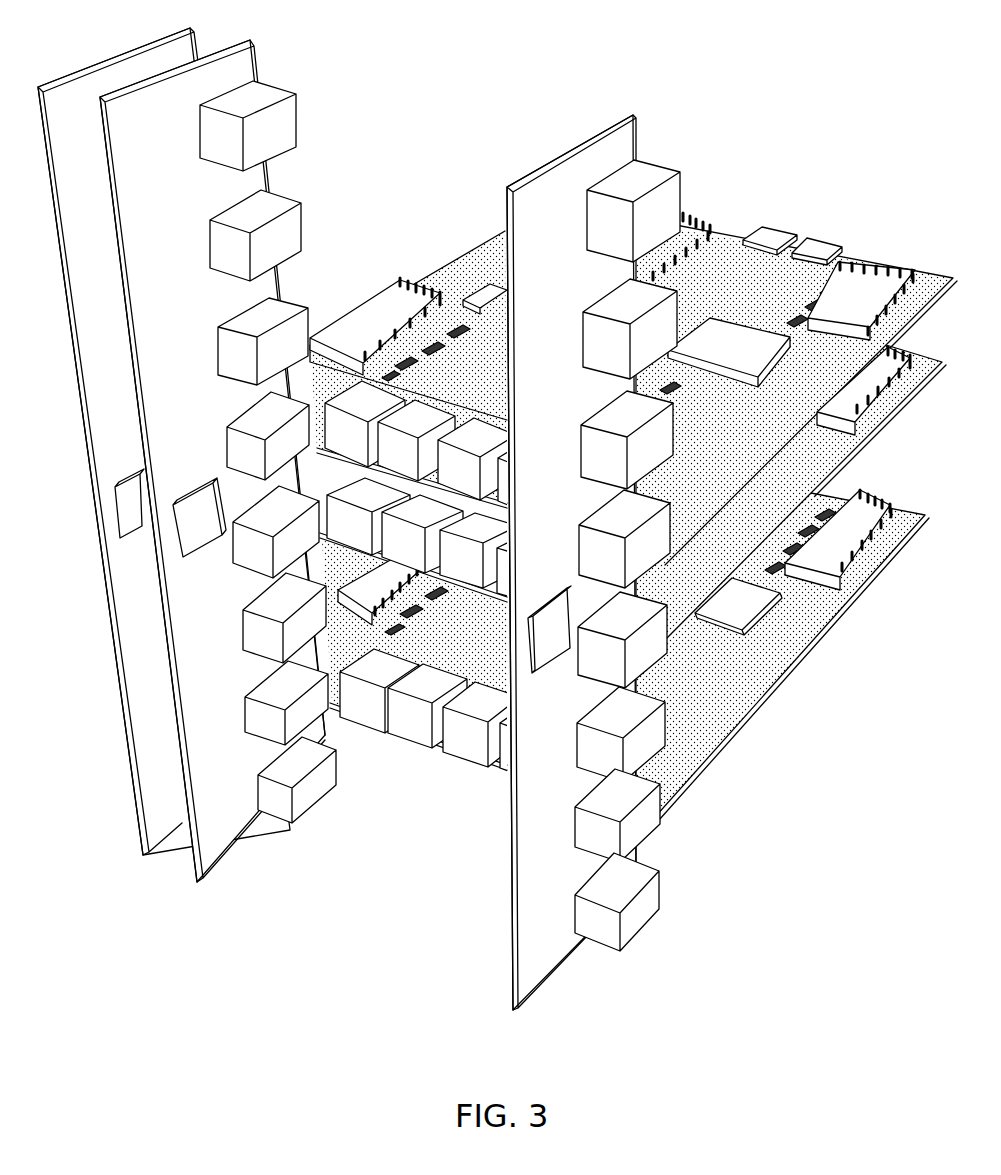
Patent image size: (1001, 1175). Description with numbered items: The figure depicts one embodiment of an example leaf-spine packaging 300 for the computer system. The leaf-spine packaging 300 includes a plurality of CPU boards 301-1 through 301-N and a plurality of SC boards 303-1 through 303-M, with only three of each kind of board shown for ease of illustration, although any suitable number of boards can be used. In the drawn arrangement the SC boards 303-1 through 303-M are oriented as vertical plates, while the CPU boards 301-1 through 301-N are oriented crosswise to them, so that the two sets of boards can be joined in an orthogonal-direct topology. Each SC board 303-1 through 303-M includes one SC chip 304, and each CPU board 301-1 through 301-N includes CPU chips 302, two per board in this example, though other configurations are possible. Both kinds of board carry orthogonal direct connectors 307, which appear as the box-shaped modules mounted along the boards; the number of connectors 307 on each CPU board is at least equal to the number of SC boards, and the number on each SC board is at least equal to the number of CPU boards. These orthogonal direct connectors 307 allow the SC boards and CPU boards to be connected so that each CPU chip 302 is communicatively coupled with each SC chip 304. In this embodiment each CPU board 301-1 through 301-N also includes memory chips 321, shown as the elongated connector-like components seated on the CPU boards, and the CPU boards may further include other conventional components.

The leaf-spine packaging 300 is at (497, 534).
The CPU board 301-1 is at (430, 268).
The CPU board 301-N is at (745, 718).
The CPU chip 302 is at (495, 292).
The SC board 303-1 is at (173, 838).
The SC board 303-M is at (550, 955).
The SC chip 304 is at (190, 525).
The orthogonal direct connector 307 is at (267, 93).
The memory chip 321 is at (358, 318).